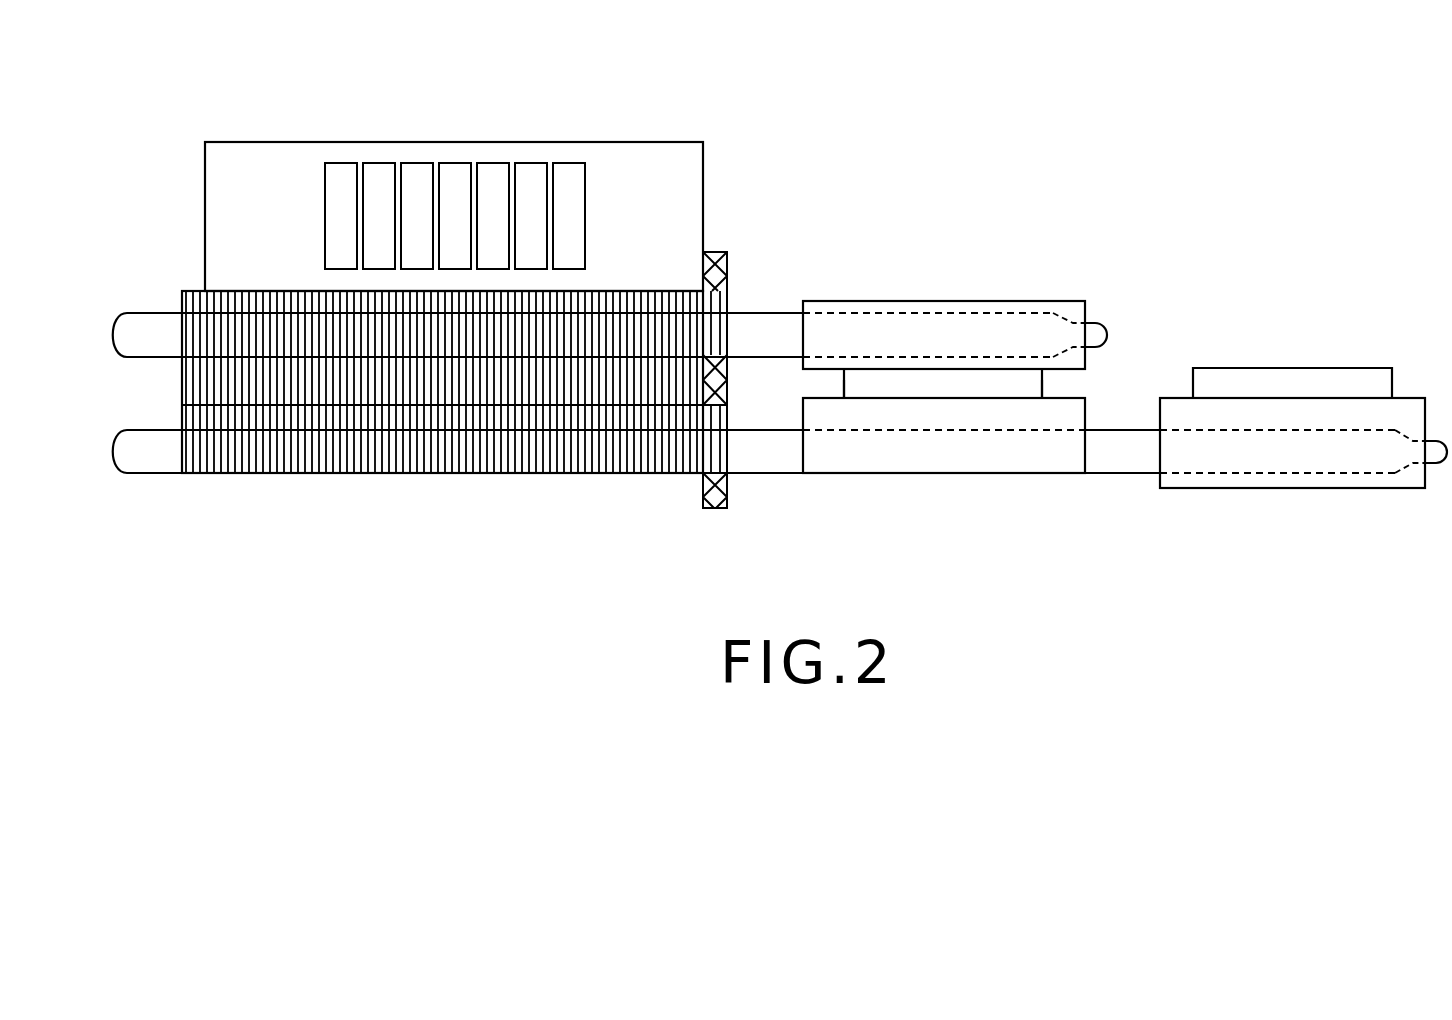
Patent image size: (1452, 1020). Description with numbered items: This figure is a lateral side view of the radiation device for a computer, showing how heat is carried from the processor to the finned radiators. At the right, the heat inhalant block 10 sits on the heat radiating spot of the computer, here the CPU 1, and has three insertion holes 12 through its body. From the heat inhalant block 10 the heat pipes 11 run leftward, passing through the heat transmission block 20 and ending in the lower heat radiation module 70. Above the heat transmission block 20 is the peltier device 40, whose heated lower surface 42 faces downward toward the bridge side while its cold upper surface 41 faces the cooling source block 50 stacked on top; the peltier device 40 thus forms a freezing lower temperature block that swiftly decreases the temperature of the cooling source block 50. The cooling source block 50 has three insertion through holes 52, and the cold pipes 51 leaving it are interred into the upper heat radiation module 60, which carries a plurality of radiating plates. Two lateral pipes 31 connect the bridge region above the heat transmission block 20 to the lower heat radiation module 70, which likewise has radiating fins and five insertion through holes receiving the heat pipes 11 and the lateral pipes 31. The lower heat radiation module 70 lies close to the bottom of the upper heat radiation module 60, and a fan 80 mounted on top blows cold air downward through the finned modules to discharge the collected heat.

The CPU 1 is at (1293, 380).
The heat inhalant block 10 is at (1260, 458).
The heat pipes 11 is at (1133, 455).
The insertion holes 12 is at (1403, 470).
The heat transmission block 20 is at (1007, 457).
The lateral pipes 31 is at (772, 453).
The peltier device 40 is at (937, 380).
The cold upper surface 41 is at (873, 365).
The heated lower surface 42 is at (872, 400).
The cooling source block 50 is at (1000, 303).
The cold pipes 51 is at (774, 322).
The insertion through holes 52 is at (1073, 303).
The upper heat radiation module 60 is at (187, 290).
The lower heat radiation module 70 is at (238, 473).
The fan 80 is at (295, 167).